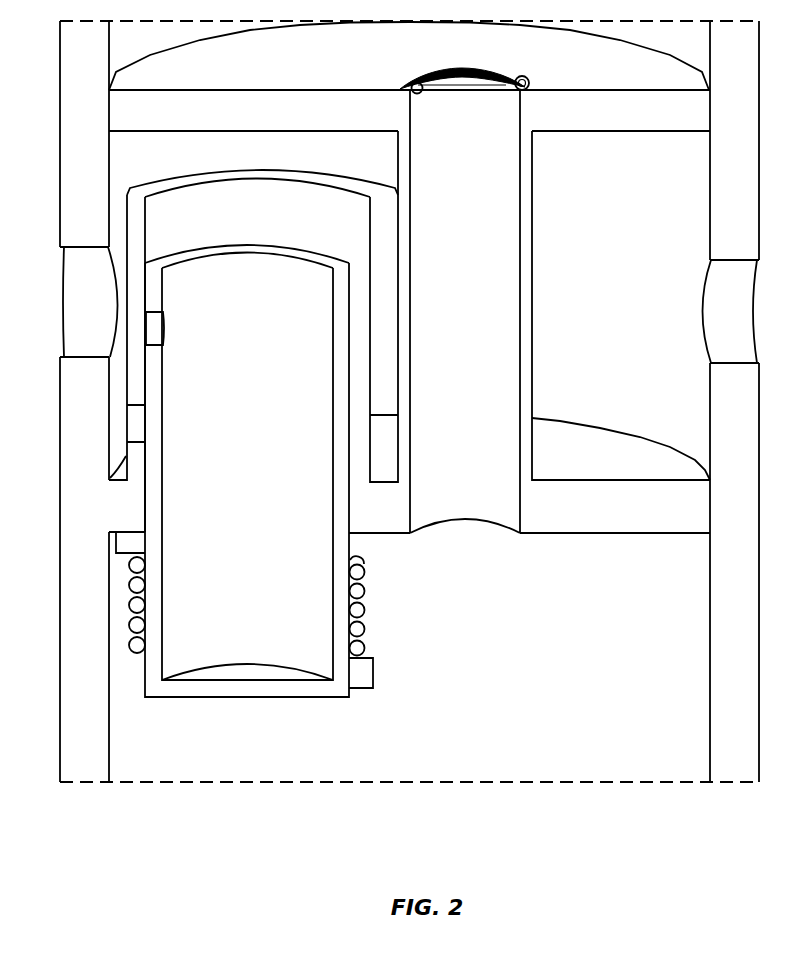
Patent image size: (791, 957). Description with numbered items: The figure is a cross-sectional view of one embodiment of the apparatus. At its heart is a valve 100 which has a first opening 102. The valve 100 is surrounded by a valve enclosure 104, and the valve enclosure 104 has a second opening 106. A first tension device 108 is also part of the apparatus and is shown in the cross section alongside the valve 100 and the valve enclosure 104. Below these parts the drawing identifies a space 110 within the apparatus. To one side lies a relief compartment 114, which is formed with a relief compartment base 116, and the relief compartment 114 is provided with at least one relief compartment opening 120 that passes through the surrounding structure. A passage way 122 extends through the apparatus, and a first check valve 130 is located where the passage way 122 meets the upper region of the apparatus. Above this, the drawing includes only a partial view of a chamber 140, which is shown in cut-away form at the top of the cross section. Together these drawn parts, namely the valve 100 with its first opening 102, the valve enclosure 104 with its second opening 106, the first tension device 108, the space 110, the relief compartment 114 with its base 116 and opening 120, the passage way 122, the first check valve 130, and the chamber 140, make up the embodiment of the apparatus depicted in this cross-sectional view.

The valve 100 is at (236, 463).
The first opening 102 is at (165, 324).
The valve enclosure 104 is at (231, 218).
The second opening 106 is at (148, 416).
The first tension device 108 is at (363, 588).
The space 110 is at (425, 701).
The relief compartment 114 is at (613, 261).
The relief compartment base 116 is at (564, 468).
The relief compartment opening 120 is at (79, 296).
The passage way 122 is at (453, 315).
The first check valve 130 is at (441, 93).
The chamber 140 is at (370, 53).